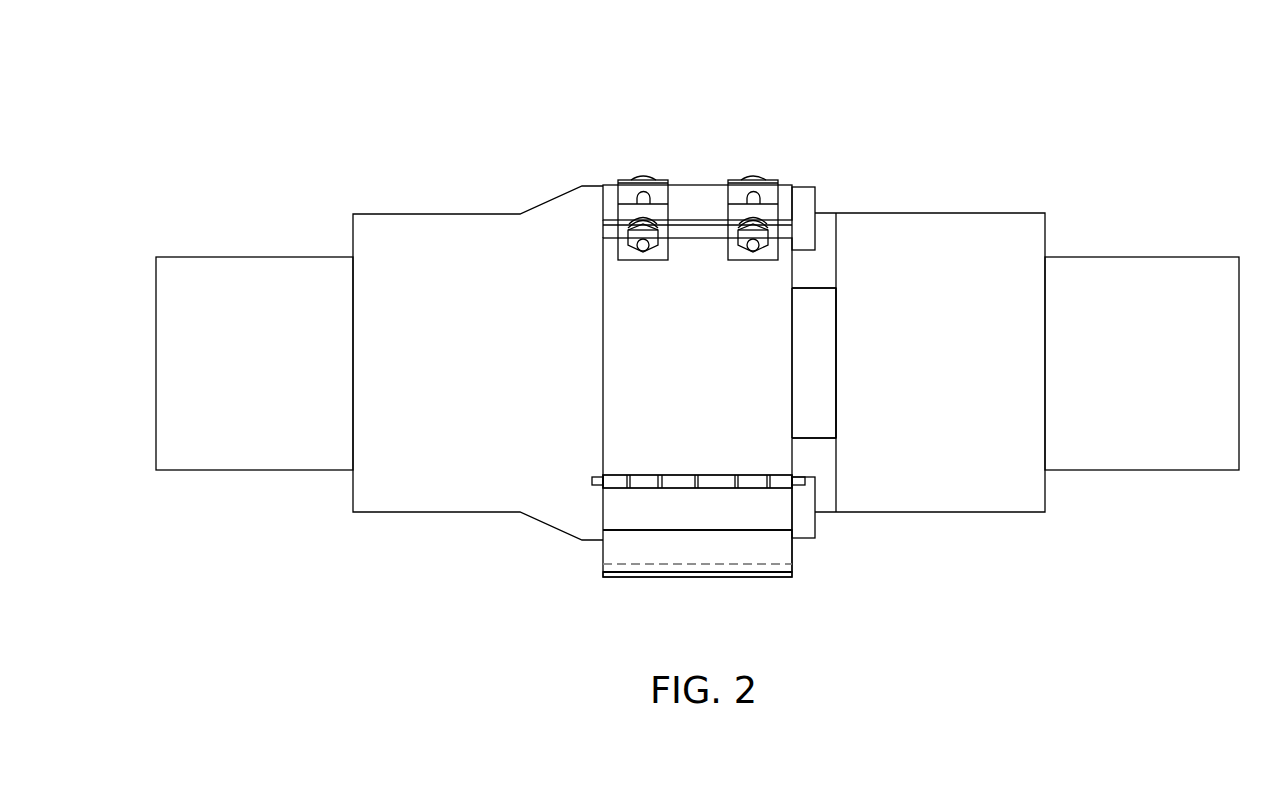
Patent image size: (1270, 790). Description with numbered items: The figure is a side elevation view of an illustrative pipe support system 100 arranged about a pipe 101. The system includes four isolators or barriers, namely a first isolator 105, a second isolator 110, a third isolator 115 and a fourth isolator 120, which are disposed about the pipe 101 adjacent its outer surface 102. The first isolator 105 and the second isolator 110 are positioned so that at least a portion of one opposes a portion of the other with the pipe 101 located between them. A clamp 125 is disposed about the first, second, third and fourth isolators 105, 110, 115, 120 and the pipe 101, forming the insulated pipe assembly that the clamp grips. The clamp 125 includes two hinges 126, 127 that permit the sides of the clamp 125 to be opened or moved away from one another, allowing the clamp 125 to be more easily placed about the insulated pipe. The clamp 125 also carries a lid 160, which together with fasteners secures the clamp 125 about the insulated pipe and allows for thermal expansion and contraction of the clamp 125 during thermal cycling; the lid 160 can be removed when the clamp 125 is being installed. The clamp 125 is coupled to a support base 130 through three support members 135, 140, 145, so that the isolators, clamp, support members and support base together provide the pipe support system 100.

The pipe support system 100 is at (328, 70).
The pipe 101 is at (235, 256).
The outer surface 102 is at (1139, 285).
The first isolator 105 is at (812, 459).
The second isolator 110 is at (812, 268).
The third isolator 115 is at (812, 340).
The fourth isolator 120 is at (872, 337).
The clamp 125 is at (628, 336).
The hinge 126 is at (648, 485).
The hinge 127 is at (648, 485).
The support base 130 is at (781, 573).
The support member 135 is at (768, 555).
The support member 140 is at (838, 557).
The support member 145 is at (838, 557).
The lid 160 is at (701, 198).